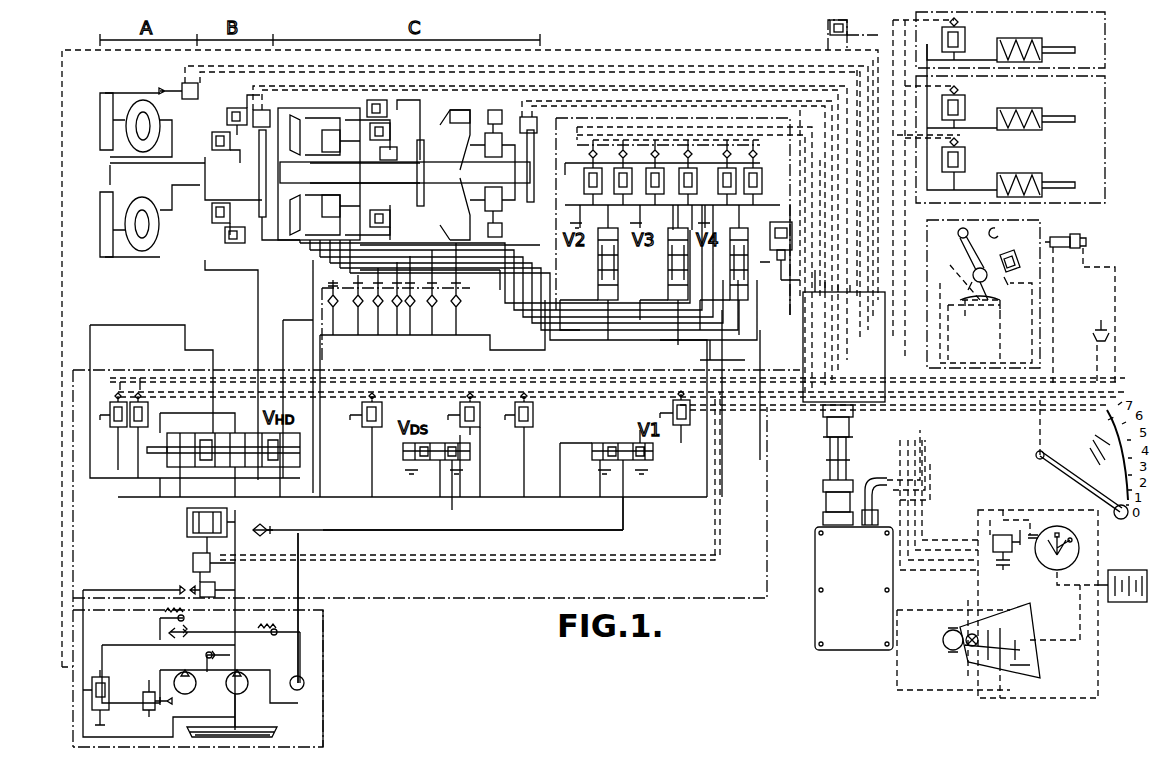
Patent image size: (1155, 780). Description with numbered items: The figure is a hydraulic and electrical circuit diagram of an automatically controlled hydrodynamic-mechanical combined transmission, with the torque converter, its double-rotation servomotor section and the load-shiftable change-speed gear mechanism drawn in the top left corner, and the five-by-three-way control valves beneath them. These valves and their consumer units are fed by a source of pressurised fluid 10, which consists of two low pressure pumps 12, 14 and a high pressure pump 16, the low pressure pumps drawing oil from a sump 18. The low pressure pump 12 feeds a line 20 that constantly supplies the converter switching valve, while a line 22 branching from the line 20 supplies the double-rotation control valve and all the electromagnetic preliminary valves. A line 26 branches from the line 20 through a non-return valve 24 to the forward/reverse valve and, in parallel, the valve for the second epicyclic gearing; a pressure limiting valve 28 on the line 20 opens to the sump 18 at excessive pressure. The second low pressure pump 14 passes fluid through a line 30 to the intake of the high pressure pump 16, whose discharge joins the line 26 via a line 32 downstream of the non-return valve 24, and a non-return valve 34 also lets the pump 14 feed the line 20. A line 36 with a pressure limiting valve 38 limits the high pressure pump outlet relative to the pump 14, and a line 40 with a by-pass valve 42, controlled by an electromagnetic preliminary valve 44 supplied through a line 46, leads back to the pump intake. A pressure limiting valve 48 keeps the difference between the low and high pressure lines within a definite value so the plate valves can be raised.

The source of pressurised fluid 10 is at (325, 678).
The low pressure pump 12 is at (193, 690).
The low pressure pump 14 is at (238, 717).
The high pressure pump 16 is at (302, 688).
The sump 18 is at (277, 732).
The line 20 is at (236, 580).
The line 22 is at (258, 490).
The non-return valve 24 is at (267, 530).
The line 26 is at (460, 530).
The pressure limiting valve 28 is at (178, 615).
The line 30 is at (243, 675).
The line 32 is at (300, 582).
The non-return valve 34 is at (207, 672).
The line 36 is at (183, 632).
The pressure limiting valve 38 is at (300, 635).
The line 40 is at (158, 690).
The by-pass valve 42 is at (157, 710).
The electromagnetic preliminary valve 44 is at (105, 697).
The line 46 is at (126, 645).
The pressure limiting valve 48 is at (781, 222).